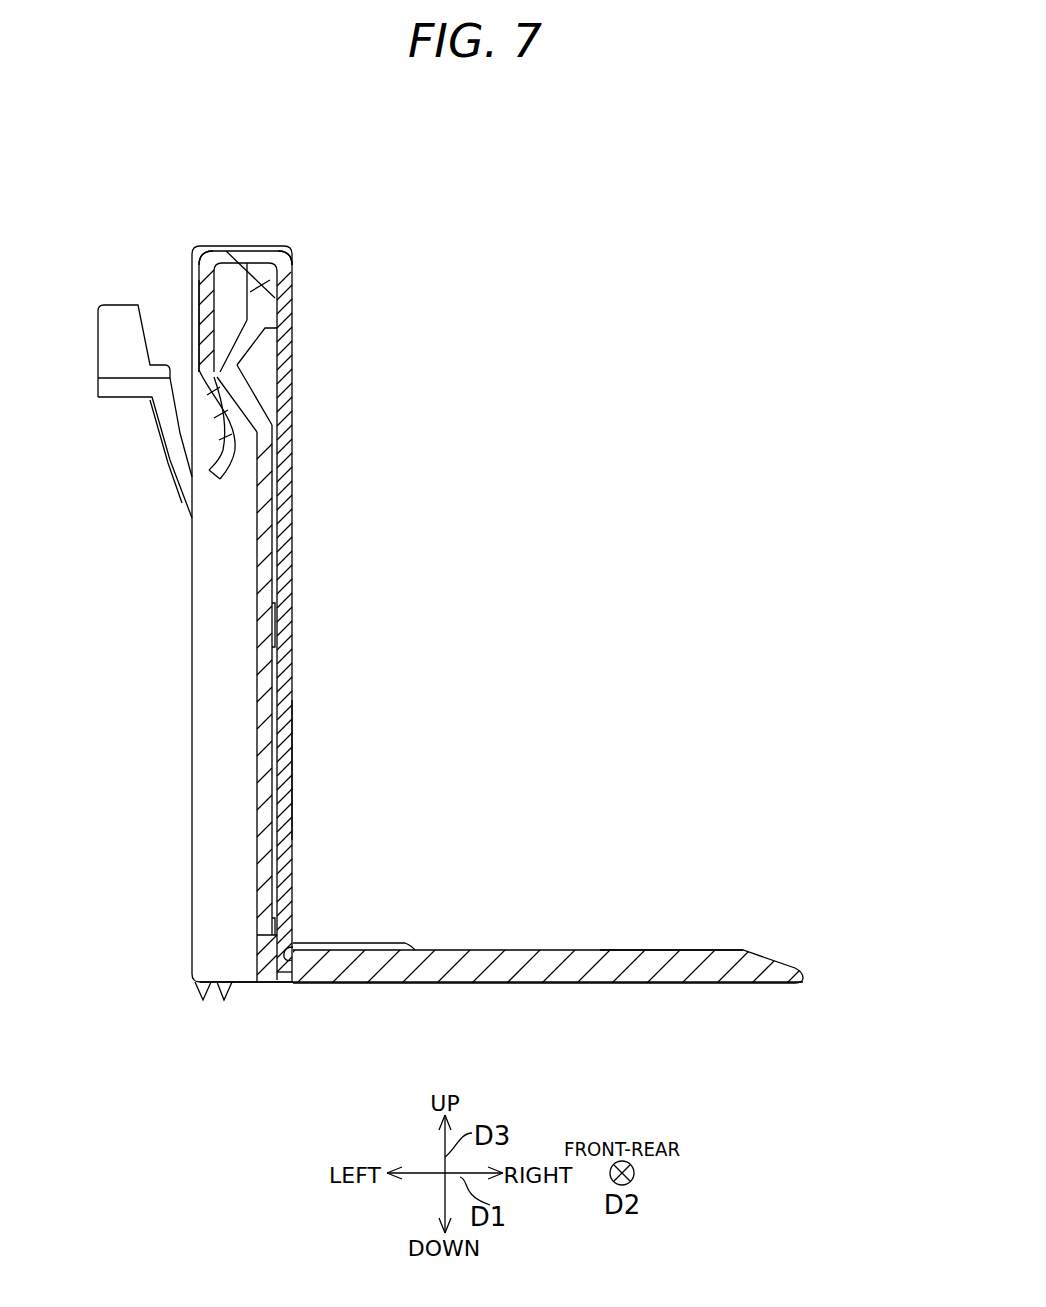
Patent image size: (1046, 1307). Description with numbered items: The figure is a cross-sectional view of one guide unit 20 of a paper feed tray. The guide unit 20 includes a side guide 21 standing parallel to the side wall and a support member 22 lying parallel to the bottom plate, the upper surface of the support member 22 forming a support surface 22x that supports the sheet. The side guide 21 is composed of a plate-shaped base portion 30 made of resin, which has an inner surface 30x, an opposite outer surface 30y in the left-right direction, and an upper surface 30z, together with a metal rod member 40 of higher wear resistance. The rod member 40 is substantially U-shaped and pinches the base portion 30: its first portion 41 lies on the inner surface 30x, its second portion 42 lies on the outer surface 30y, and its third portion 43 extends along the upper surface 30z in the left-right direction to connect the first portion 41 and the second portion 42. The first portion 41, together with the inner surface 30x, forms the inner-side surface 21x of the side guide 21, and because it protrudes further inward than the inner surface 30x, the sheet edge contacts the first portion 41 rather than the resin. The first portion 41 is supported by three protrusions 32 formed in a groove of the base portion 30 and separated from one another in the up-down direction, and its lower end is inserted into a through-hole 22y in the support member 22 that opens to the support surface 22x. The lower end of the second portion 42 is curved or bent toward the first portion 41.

The guide unit 20 is at (580, 222).
The side guide 21 is at (280, 713).
The inner-side surface 21x is at (293, 768).
The support member 22 is at (525, 950).
The support surface 22x is at (643, 950).
The through-hole 22y is at (292, 945).
The base portion 30 is at (292, 260).
The inner surface 30x is at (292, 252).
The outer surface 30y is at (200, 292).
The upper surface 30z is at (203, 250).
The protrusion 32 is at (273, 303).
The rod member 40 is at (260, 247).
The first portion 41 is at (292, 495).
The second portion 42 is at (200, 345).
The third portion 43 is at (237, 262).